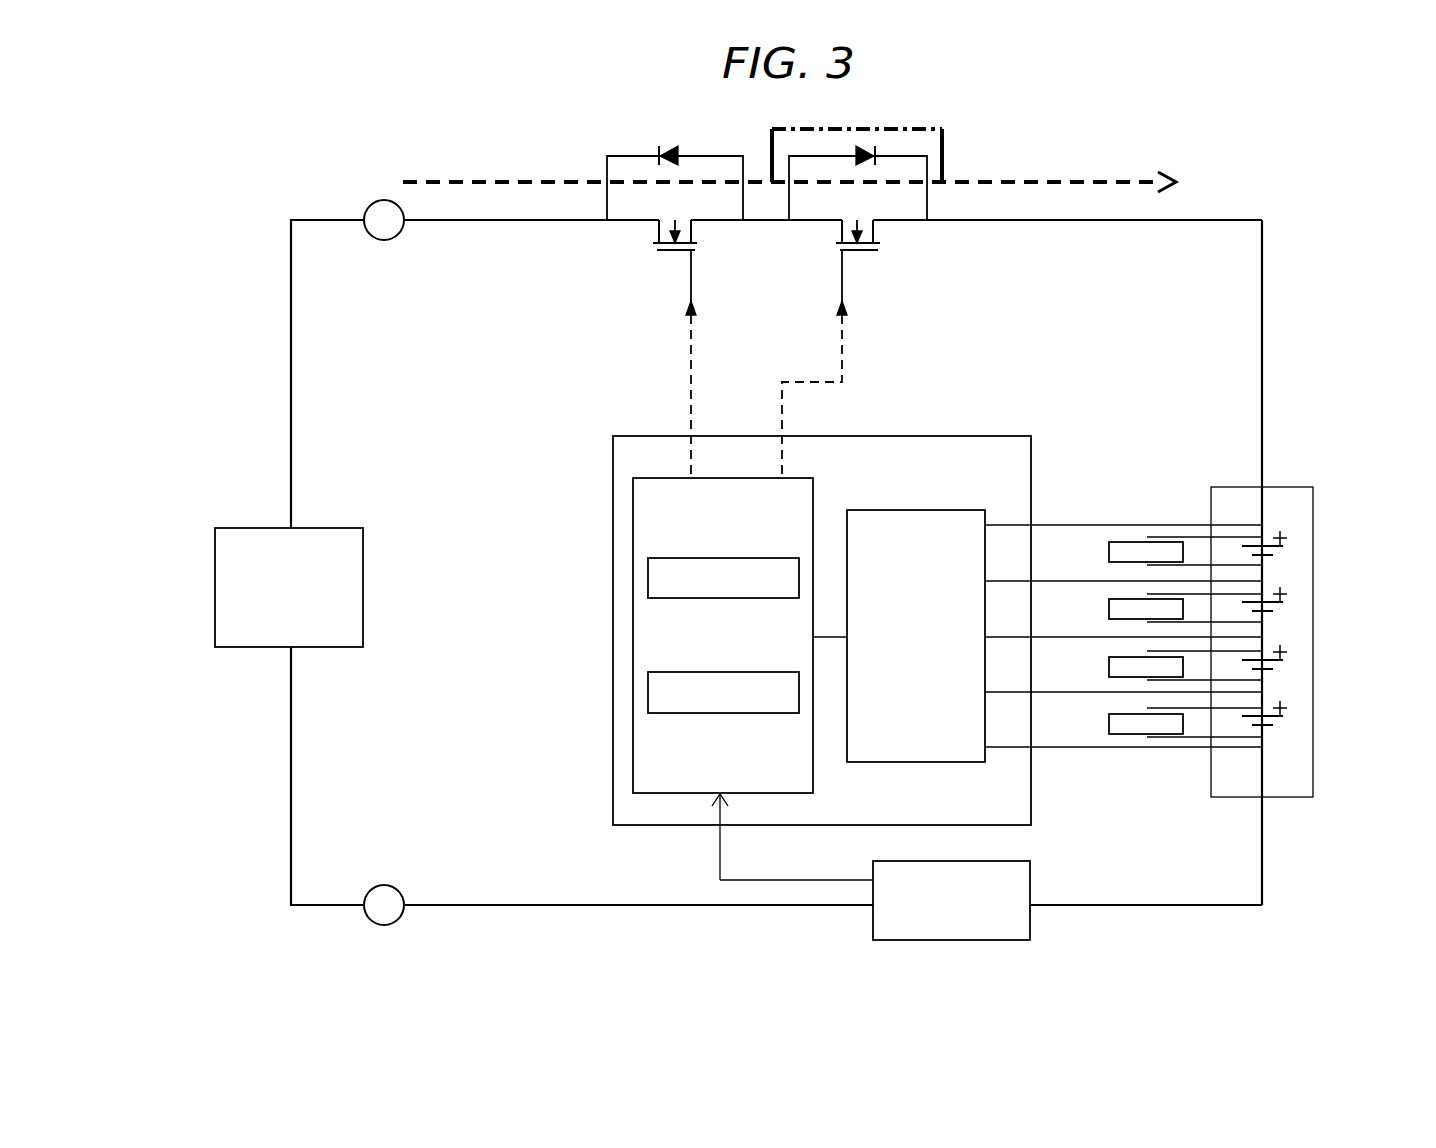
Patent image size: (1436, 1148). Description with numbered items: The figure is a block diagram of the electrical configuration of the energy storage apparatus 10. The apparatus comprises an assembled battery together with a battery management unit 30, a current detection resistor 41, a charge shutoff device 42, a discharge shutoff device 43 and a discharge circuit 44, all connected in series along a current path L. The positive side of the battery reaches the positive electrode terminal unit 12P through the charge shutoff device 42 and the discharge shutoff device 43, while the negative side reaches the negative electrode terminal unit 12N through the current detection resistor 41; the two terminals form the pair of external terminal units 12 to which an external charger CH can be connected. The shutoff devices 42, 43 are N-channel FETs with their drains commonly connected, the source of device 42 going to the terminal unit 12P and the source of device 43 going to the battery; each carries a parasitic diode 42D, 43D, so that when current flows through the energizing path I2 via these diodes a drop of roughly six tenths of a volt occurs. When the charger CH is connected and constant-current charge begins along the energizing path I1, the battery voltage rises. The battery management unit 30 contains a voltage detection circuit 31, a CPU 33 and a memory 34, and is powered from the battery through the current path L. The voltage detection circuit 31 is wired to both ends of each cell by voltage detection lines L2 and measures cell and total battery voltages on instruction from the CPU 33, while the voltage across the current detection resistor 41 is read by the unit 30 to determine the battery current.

The energy storage apparatus 10 is at (1258, 124).
The external terminal units 12 is at (443, 542).
The positive electrode terminal unit 12P is at (381, 200).
The negative electrode terminal unit 12N is at (387, 925).
The charge shutoff device 42 is at (636, 236).
The parasitic diode 42D is at (672, 146).
The discharge shutoff device 43 is at (894, 236).
The parasitic diode 43D is at (866, 146).
The energizing path I1 is at (1073, 182).
The energizing path I2 is at (946, 140).
The current path L is at (1262, 295).
The external charger CH is at (250, 528).
The battery management unit 30 is at (822, 693).
The voltage detection circuit 31 is at (905, 510).
The CPU 33 is at (710, 558).
The memory 34 is at (690, 713).
The discharge circuit 44 is at (1128, 542).
The voltage detection lines L2 is at (1055, 581).
The current detection resistor 41 is at (1030, 927).